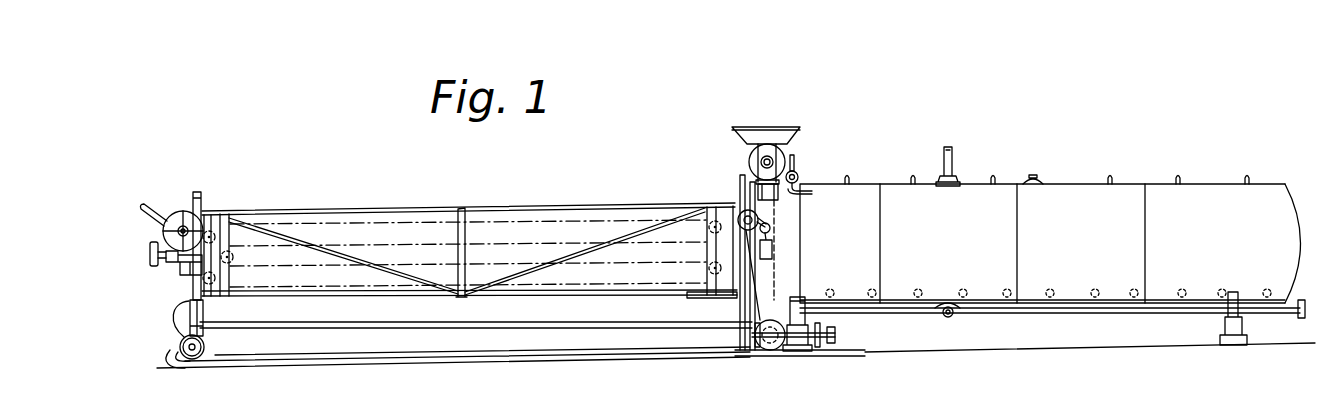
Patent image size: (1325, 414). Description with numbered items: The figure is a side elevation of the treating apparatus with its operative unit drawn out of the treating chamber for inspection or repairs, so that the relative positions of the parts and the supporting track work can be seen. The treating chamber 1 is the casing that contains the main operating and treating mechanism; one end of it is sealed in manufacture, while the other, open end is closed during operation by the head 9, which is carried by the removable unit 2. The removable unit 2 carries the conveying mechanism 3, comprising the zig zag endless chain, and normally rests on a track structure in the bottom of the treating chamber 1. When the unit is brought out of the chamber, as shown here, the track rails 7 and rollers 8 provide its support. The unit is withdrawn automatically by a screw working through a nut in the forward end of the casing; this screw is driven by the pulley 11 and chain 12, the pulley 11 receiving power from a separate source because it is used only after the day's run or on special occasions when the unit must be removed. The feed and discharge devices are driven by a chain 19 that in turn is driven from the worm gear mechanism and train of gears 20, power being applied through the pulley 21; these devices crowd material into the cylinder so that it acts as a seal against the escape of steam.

The treating chamber 1 is at (1052, 246).
The removable unit 2 is at (465, 212).
The conveying mechanism 3 is at (351, 222).
The track rails 7 is at (530, 356).
The rollers 8 is at (179, 343).
The head 9 is at (194, 193).
The pulley 11 is at (841, 337).
The chain 12 is at (749, 330).
The chain 19 is at (776, 272).
The worm gear mechanism and train of gears 20 is at (172, 222).
The pulley 21 is at (151, 250).